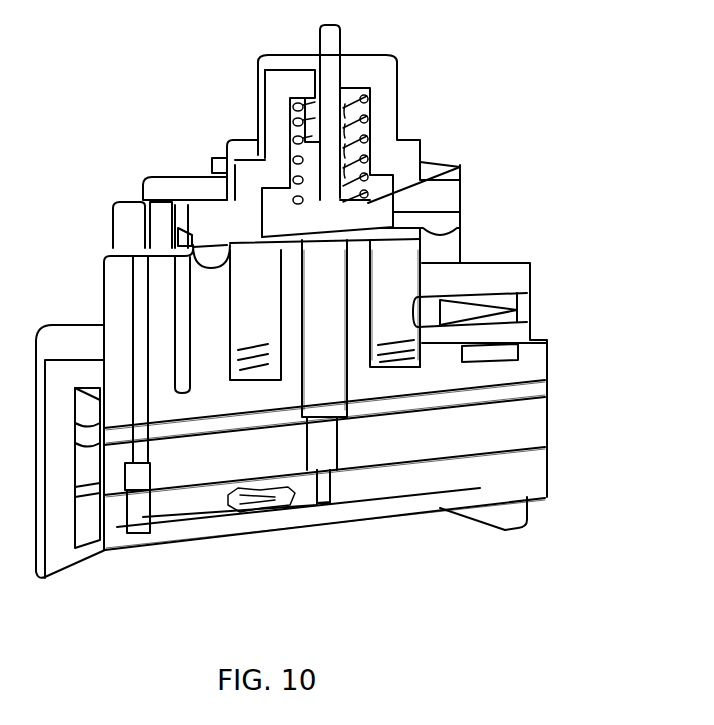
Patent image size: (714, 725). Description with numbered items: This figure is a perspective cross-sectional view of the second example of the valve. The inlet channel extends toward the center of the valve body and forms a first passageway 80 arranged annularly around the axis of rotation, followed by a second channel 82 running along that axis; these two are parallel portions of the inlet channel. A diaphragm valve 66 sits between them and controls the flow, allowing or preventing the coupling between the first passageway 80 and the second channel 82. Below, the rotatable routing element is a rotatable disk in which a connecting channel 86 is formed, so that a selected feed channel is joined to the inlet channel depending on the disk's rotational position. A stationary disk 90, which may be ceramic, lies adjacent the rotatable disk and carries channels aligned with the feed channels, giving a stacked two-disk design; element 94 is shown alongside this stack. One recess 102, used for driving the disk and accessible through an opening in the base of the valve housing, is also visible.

The diaphragm valve 66 is at (444, 170).
The first passageway 80 is at (398, 279).
The second channel 82 is at (328, 295).
The connecting channel 86 is at (217, 498).
The stationary disk 90 is at (538, 418).
The lower plate 94 is at (538, 468).
The recess 102 is at (330, 503).